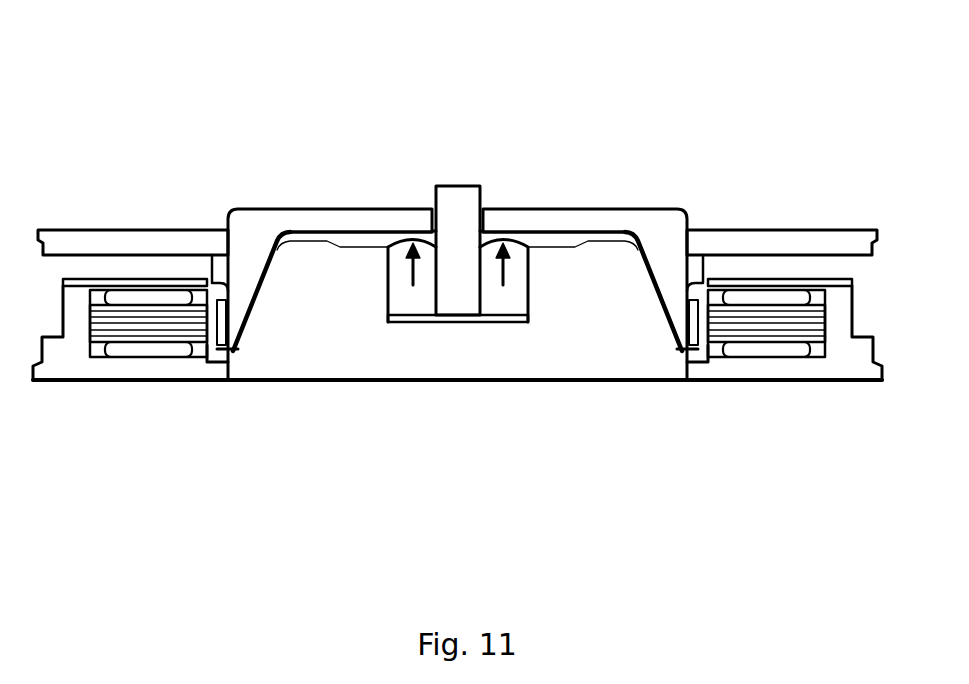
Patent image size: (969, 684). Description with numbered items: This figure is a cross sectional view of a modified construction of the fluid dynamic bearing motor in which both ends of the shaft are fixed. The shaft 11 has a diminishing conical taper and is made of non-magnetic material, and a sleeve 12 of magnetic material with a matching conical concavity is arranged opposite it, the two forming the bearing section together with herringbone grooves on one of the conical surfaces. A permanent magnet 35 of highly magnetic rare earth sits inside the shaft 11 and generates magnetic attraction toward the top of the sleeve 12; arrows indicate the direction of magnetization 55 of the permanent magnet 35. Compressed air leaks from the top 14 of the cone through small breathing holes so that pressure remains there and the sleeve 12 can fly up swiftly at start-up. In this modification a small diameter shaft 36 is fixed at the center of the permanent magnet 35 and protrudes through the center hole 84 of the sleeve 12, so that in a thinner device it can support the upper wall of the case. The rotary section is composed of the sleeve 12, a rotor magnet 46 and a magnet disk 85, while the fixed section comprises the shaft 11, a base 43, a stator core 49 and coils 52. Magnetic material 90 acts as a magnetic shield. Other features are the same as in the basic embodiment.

The shaft 11 is at (607, 305).
The sleeve 12 is at (663, 268).
The top of the cone 14 is at (352, 240).
The permanent magnet 35 is at (427, 292).
The small diameter shaft 36 is at (455, 217).
The base 43 is at (847, 363).
The rotor magnet 46 is at (215, 348).
The stator core 49 is at (135, 318).
The coils 52 is at (167, 350).
The direction of magnetization 55 is at (500, 272).
The center hole 84 is at (430, 218).
The magnet disk 85 is at (810, 242).
The magnetic material 90 is at (137, 278).